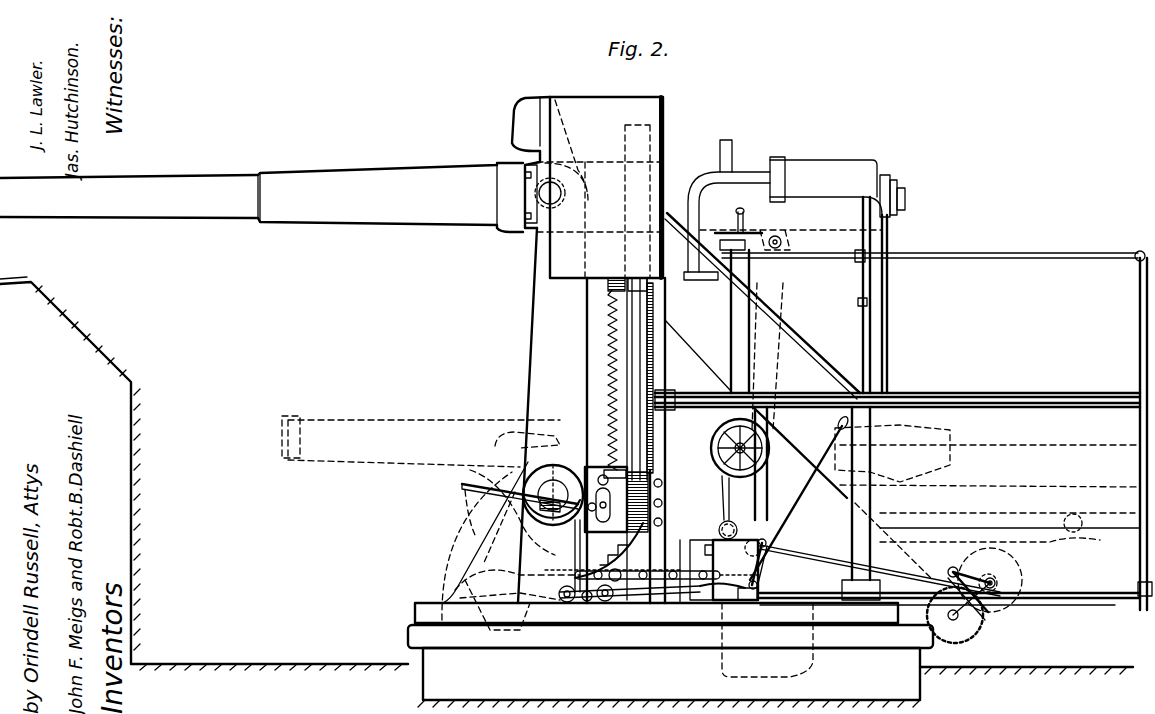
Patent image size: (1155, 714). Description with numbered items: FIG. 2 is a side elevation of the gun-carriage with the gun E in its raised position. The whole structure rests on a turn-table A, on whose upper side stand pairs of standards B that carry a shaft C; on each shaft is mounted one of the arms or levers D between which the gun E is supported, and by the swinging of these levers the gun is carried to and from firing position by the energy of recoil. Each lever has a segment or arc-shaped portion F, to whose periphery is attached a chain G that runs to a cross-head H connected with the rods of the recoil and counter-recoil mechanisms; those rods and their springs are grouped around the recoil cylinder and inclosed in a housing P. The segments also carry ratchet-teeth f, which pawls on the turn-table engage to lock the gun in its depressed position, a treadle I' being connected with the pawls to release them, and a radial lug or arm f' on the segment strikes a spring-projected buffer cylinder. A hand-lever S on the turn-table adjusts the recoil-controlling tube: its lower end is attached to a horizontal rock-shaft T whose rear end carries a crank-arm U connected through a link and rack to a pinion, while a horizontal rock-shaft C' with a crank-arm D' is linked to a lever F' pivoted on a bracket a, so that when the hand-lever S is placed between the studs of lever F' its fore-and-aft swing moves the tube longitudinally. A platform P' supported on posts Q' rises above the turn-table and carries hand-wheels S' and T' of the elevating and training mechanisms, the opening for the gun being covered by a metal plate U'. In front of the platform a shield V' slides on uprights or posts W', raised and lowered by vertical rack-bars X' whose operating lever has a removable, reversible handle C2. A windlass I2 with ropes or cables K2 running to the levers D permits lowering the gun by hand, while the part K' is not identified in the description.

The turn-table A is at (670, 655).
The gun E is at (378, 213).
The gun-supporting arm or lever D is at (521, 350).
The shield V' is at (599, 187).
The vertical rack-bar X' is at (592, 440).
The upright or post W' is at (678, 440).
The cross-head H is at (599, 514).
The segment or arc-shaped portion F is at (607, 560).
The shaft C is at (553, 466).
The removable handle C2 is at (520, 514).
The standard B is at (470, 560).
The radial lug or arm f' is at (502, 600).
The lever K' is at (508, 608).
The chain G is at (693, 568).
The ratchet-teeth f is at (652, 603).
The treadle I' is at (696, 582).
The hand-wheel S' is at (794, 266).
The hand-wheel T' is at (791, 314).
The platform P' is at (934, 430).
The metal plate U' is at (897, 386).
The rope or cable K2 is at (775, 440).
The hand-lever S is at (815, 503).
The post Q' is at (987, 502).
The bracket a is at (750, 585).
The lever F' is at (774, 564).
The horizontal rock-shaft T is at (950, 584).
The housing P is at (1010, 542).
The crank-arm U is at (1132, 577).
The windlass I2 is at (1020, 600).
The crank-arm D' is at (986, 607).
The horizontal rock-shaft C' is at (960, 628).